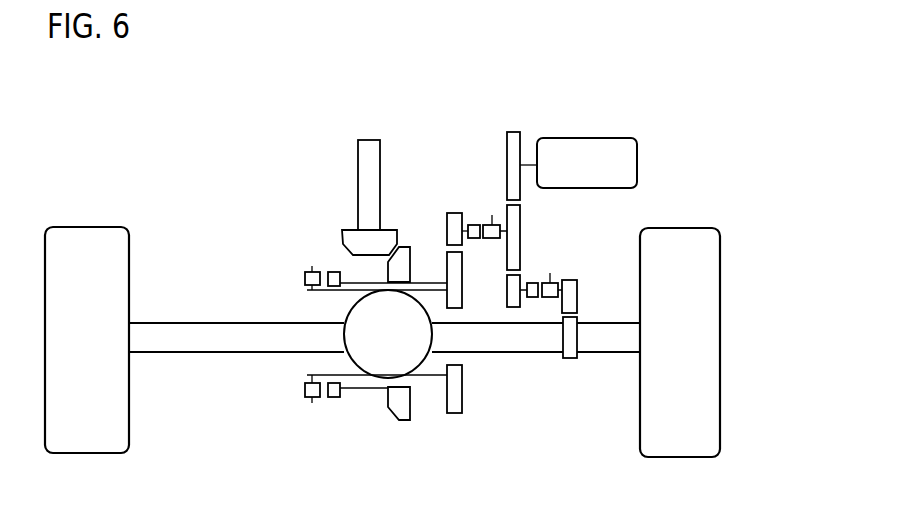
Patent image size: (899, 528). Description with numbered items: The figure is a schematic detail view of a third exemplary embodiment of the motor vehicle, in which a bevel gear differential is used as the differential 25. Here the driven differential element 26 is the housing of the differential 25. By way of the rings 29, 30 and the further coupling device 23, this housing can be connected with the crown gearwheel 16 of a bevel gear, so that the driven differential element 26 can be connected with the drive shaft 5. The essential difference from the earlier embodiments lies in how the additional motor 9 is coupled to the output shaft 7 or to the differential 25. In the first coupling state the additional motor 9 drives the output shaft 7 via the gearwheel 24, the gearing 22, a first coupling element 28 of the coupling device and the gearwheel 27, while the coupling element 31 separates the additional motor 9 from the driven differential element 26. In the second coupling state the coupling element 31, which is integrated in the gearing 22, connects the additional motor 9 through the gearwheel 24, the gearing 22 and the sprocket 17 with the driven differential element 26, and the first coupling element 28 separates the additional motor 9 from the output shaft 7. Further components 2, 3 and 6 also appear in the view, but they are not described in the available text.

The first wheel 2 is at (87, 227).
The second wheel 3 is at (688, 228).
The drive shaft 5 is at (358, 176).
The first axle shaft section 6 is at (205, 332).
The output shaft 7 is at (598, 330).
The additional motor 9 is at (625, 163).
The crown gearwheel 16 is at (401, 420).
The sprocket 17 is at (462, 385).
The gearing 22 is at (522, 228).
The further coupling device 23 is at (310, 266).
The gearwheel 24 is at (512, 132).
The differential 25 is at (368, 425).
The driven differential element 26 is at (345, 320).
The gearwheel 27 is at (577, 345).
The first coupling element 28 is at (558, 262).
The ring 29 is at (306, 291).
The ring 30 is at (342, 278).
The coupling element 31 is at (478, 215).